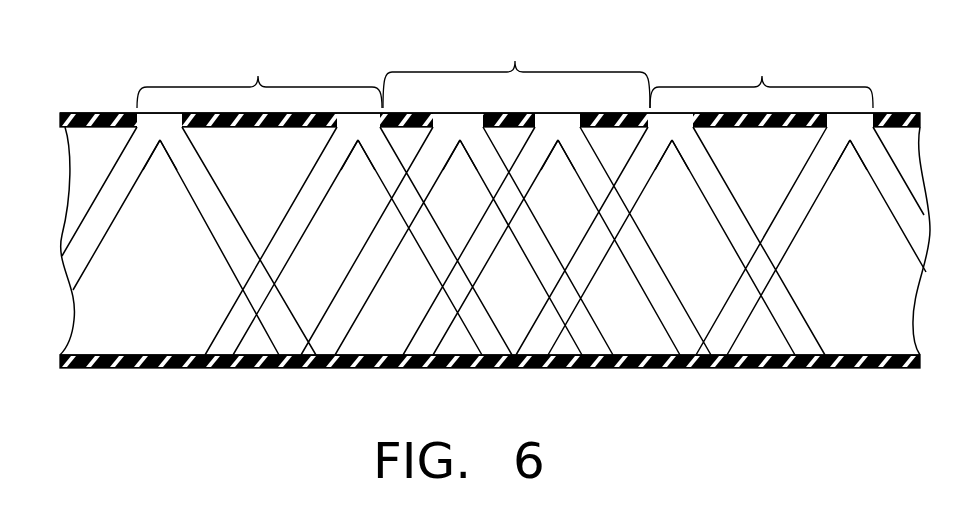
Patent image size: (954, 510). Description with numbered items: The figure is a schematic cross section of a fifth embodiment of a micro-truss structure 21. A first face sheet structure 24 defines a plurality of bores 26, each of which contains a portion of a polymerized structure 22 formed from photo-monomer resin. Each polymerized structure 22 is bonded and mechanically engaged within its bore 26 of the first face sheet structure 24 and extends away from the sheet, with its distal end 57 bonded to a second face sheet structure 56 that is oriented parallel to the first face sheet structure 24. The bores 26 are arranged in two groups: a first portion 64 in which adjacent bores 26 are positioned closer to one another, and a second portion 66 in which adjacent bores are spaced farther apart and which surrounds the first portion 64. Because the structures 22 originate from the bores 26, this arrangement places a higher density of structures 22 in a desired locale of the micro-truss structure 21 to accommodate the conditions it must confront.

The micro-truss structure 21 is at (402, 58).
The polymerized structure 22 is at (287, 240).
The first face sheet structure 24 is at (113, 127).
The bore 26 is at (343, 134).
The second face sheet structure 56 is at (800, 363).
The distal end 57 is at (828, 355).
The first portion of the plurality of bores 64 is at (515, 61).
The second portion of the plurality of bores 66 is at (258, 76).